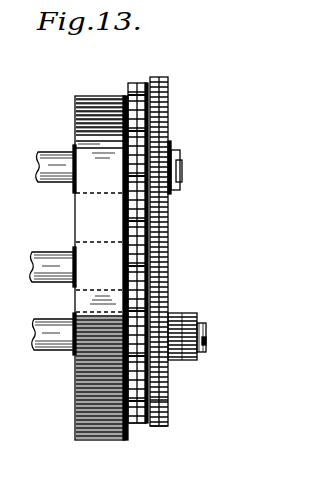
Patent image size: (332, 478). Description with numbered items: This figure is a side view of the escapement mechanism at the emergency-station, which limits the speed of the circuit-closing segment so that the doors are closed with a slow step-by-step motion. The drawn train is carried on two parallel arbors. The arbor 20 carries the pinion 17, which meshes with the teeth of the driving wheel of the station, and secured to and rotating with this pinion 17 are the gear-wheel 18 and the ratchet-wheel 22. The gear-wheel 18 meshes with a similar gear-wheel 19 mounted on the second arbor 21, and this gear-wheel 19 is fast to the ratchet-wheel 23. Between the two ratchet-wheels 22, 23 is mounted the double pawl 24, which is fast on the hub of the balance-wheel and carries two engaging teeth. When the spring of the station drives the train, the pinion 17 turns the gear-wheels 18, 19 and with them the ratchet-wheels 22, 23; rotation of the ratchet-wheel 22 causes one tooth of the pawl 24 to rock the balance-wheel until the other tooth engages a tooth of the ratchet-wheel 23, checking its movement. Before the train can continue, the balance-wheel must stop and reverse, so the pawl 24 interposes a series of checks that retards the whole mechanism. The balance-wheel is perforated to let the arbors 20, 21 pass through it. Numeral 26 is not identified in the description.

The pinion 17 is at (180, 320).
The gear-wheel 18 is at (168, 418).
The gear-wheel 19 is at (169, 116).
The arbor 20 is at (41, 320).
The arbor 21 is at (42, 164).
The ratchet-wheel 22 is at (146, 423).
The ratchet-wheel 23 is at (138, 101).
The double pawl 24 is at (101, 268).
The shaft 26 is at (40, 252).